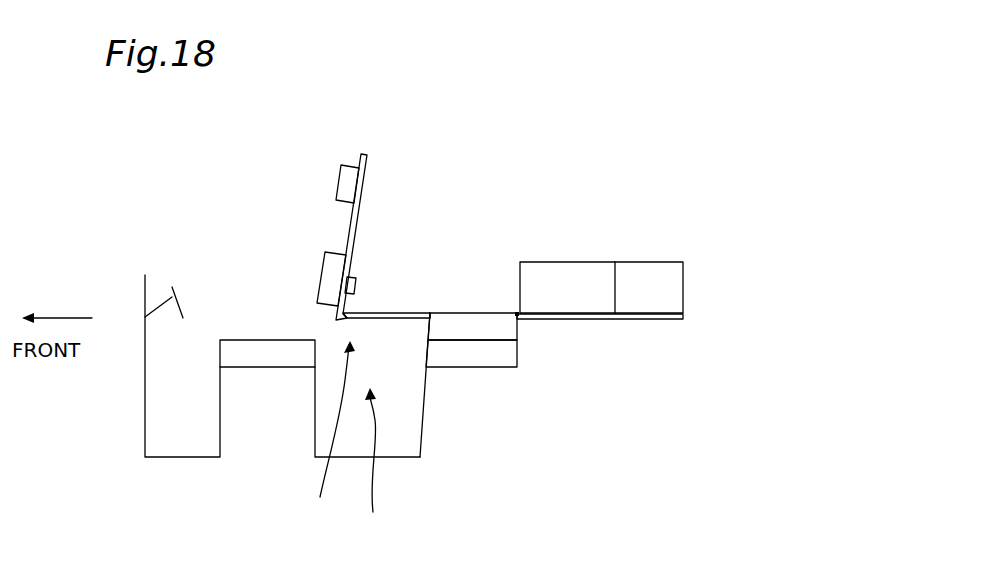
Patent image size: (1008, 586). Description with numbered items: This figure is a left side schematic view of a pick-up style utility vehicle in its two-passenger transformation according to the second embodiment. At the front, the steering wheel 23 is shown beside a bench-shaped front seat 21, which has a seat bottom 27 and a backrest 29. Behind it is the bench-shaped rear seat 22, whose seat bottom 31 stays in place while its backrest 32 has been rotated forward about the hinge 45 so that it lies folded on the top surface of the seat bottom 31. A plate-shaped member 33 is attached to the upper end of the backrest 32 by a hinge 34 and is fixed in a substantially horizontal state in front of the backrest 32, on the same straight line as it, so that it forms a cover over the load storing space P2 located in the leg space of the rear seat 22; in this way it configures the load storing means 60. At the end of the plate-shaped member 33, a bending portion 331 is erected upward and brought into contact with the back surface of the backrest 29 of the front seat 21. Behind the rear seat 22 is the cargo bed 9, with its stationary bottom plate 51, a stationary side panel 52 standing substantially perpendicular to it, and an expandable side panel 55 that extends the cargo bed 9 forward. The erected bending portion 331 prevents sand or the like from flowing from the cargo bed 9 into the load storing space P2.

The cargo bed 9 is at (652, 217).
The bench-shaped front seat 21 is at (276, 275).
The bench-shaped rear seat 22 is at (478, 236).
The steering wheel 23 is at (172, 292).
The seat bottom 27 is at (268, 355).
The backrest 29 is at (326, 270).
The seat bottom 31 is at (480, 355).
The backrest 32 is at (473, 325).
The plate-shaped member 33 is at (373, 313).
The bending portion 331 is at (350, 291).
The hinge 34 is at (430, 313).
The hinge 45 is at (517, 320).
The stationary bottom plate 51 is at (650, 320).
The stationary side panel 52 is at (660, 277).
The expandable side panel 55 is at (577, 278).
The load storing means 60 is at (305, 530).
The load storing space P2 is at (390, 549).